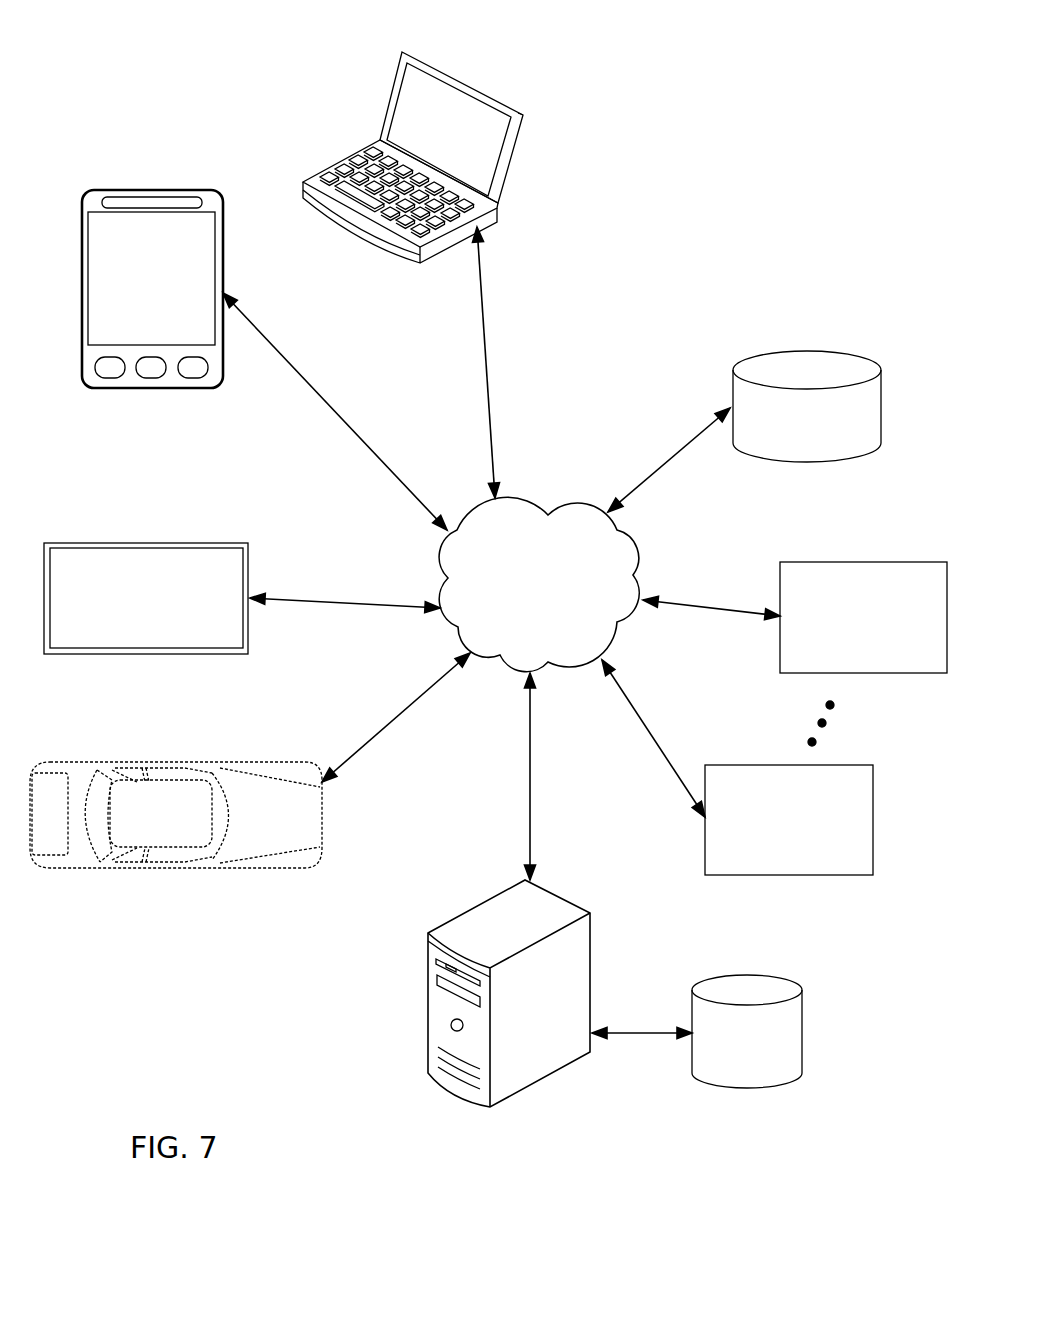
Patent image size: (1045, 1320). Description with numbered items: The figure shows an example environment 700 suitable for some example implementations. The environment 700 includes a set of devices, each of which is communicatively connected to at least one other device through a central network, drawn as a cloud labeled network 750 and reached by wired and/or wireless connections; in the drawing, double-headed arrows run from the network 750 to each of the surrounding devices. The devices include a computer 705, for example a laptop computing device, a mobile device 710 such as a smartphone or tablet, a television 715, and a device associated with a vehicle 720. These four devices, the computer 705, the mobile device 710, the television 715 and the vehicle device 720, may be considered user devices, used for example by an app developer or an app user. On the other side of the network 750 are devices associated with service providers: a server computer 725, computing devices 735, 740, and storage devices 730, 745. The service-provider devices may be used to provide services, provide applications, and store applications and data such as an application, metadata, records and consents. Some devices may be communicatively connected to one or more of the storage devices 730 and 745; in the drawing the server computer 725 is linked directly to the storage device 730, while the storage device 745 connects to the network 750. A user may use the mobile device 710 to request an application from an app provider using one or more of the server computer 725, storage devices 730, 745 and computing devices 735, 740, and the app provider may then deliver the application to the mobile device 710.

The environment 700 is at (172, 50).
The computer 705 is at (431, 145).
The mobile device 710 is at (136, 294).
The television 715 is at (127, 604).
The device associated with a vehicle 720 is at (138, 826).
The server computer 725 is at (514, 1026).
The storage device 730 is at (733, 1050).
The computing device 735 is at (771, 838).
The computing device 740 is at (847, 616).
The storage device 745 is at (791, 432).
The network 750 is at (521, 618).